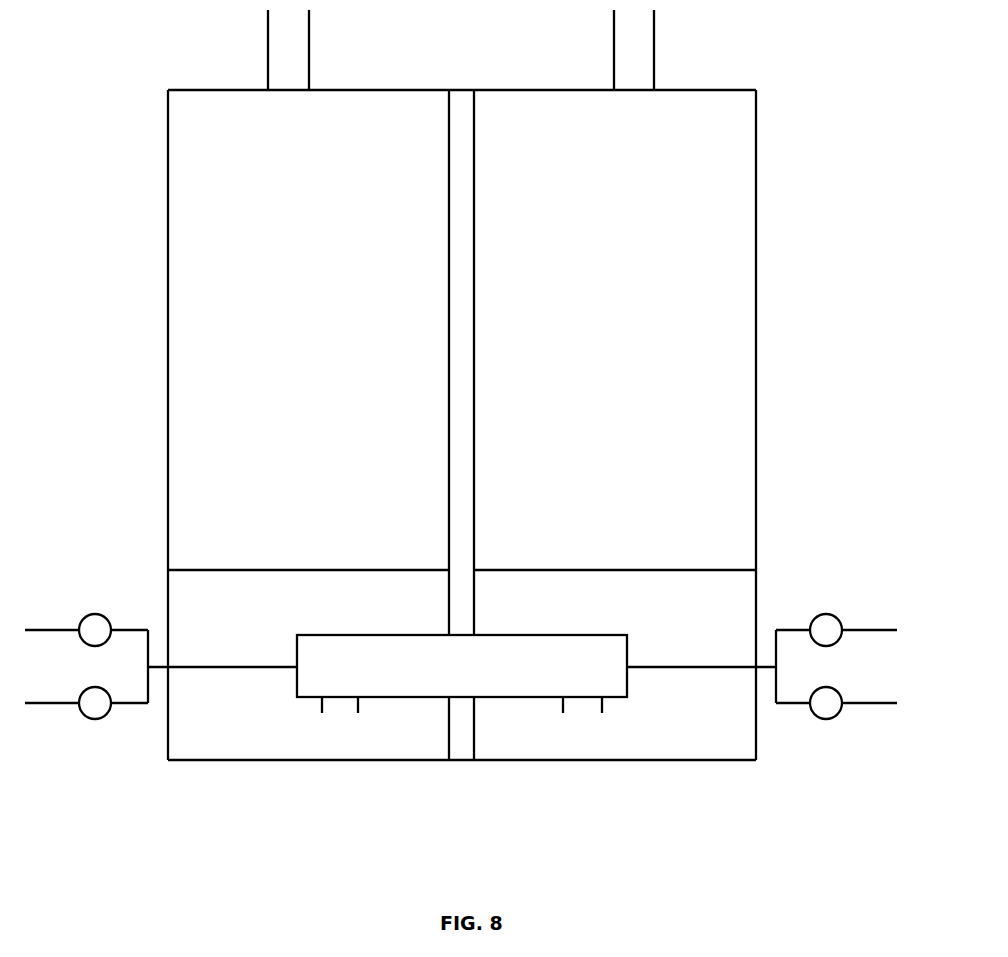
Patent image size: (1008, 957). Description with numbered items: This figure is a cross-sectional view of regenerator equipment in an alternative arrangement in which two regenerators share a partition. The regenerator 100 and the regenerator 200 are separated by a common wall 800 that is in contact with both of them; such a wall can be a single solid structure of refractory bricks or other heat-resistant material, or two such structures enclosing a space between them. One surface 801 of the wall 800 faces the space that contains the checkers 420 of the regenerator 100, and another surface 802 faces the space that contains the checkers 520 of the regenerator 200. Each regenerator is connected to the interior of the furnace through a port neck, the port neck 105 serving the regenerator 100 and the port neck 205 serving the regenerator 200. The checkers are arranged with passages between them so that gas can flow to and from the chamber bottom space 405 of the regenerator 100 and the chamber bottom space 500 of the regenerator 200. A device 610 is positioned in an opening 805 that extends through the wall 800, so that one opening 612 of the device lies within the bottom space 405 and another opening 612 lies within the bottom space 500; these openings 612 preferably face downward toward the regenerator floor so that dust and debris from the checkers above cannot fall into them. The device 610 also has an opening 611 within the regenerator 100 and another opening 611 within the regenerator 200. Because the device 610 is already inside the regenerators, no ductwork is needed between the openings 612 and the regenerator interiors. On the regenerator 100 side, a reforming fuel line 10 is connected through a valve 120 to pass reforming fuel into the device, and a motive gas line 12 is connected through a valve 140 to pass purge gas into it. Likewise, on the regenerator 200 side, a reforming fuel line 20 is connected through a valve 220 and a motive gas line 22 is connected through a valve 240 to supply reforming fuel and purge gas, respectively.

The common wall 800 is at (464, 327).
The surface of wall 801 is at (443, 236).
The surface of wall 802 is at (482, 273).
The opening 805 is at (484, 621).
The regenerator 100 is at (314, 152).
The regenerator 200 is at (649, 152).
The port neck 105 is at (268, 57).
The port neck 205 is at (654, 57).
The checkers 420 is at (314, 334).
The checkers 520 is at (649, 334).
The bottom space 405 is at (221, 605).
The bottom space 500 is at (718, 605).
The device 610 is at (481, 680).
The opening of device 611 is at (285, 652).
The opening 612 is at (462, 715).
The reforming fuel line 10 is at (52, 617).
The motive gas line 12 is at (52, 690).
The valve 120 is at (113, 616).
The valve 140 is at (113, 717).
The reforming fuel line 20 is at (870, 617).
The motive gas line 22 is at (870, 690).
The valve 220 is at (810, 616).
The valve 240 is at (810, 717).